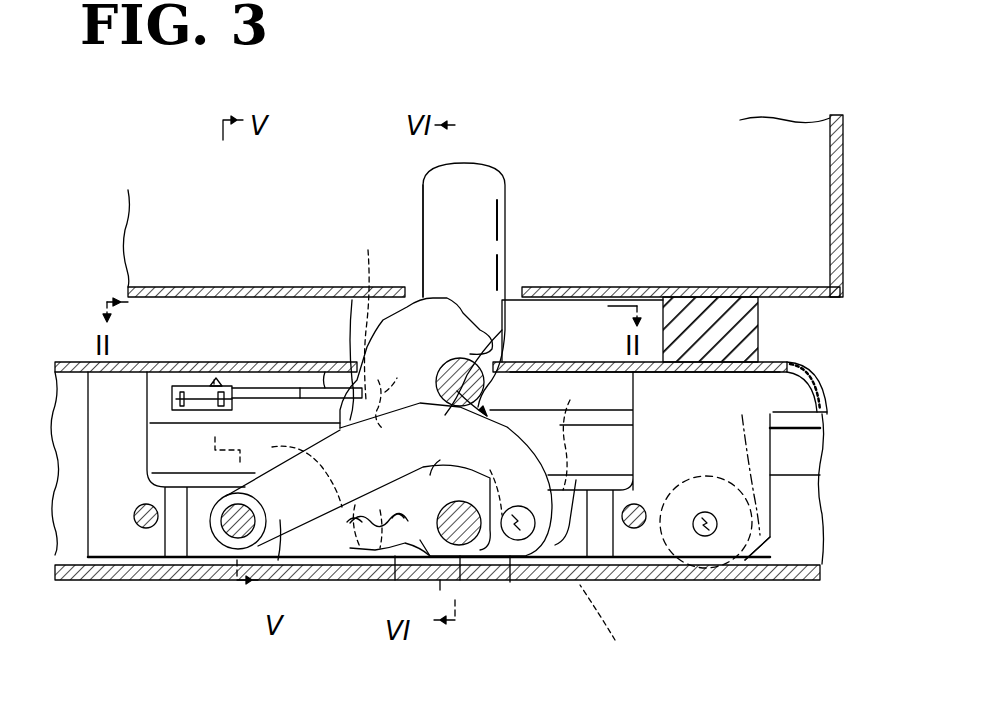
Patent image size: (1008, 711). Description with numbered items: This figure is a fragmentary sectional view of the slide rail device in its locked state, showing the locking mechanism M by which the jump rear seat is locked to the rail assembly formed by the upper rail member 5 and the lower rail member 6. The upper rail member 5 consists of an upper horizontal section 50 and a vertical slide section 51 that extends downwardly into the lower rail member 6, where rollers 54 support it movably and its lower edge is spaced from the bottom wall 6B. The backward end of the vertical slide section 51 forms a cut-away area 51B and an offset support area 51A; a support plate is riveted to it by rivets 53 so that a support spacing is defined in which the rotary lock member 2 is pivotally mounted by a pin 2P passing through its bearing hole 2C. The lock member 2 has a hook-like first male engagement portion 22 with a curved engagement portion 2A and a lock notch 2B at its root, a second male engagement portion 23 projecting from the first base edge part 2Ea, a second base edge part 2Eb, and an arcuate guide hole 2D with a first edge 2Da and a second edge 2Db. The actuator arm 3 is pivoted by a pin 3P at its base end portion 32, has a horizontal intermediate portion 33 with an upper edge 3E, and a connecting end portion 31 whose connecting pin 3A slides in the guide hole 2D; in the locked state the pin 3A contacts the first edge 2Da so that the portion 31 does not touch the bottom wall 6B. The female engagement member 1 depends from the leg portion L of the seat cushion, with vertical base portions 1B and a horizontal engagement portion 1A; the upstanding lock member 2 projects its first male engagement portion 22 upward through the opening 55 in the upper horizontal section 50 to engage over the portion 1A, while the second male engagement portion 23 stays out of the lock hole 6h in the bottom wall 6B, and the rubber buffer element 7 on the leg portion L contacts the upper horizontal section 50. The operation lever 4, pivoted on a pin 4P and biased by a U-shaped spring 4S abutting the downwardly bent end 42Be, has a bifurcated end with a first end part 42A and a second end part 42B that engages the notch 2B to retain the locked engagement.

The female engagement member 1 is at (423, 236).
The horizontal engagement portion 1A is at (504, 378).
The vertical base portions 1B is at (505, 233).
The rotary lock member 2 is at (370, 579).
The curved engagement portion 2A is at (463, 315).
The lock notch 2B is at (353, 304).
The bearing hole 2C is at (460, 584).
The arcuate guide hole 2D is at (588, 438).
The first edge of guide hole 2Da is at (491, 480).
The second edge of guide hole 2Db is at (625, 629).
The first base edge part 2Ea is at (370, 659).
The second base edge part 2Eb is at (510, 589).
The pin 2P is at (465, 549).
The actuator arm 3 is at (308, 534).
The connecting pin 3A is at (530, 579).
The upper edge of actuator arm intermediate portion 3E is at (492, 420).
The pin 3P is at (238, 525).
The operation lever 4 is at (270, 392).
The pin 4P is at (218, 382).
The U-shaped spring 4S is at (169, 392).
The upper rail member 5 is at (60, 366).
The lower rail member 6 is at (71, 586).
The bottom wall 6B is at (788, 586).
The lock hole 6h is at (443, 596).
The rubber buffer element 7 is at (743, 340).
The first male engagement portion 22 is at (502, 332).
The second male engagement portion 23 is at (370, 522).
The connecting end portion 31 is at (581, 495).
The base end portion 32 is at (280, 564).
The horizontal intermediate portion 33 is at (440, 466).
The first end part 42A is at (325, 392).
The second end part 42B is at (377, 309).
The downwardly bent end 42Be is at (421, 373).
The upper horizontal section 50 is at (788, 368).
The vertical slide section 51 is at (785, 460).
The offset support area 51A is at (600, 579).
The cut-away area 51B is at (668, 430).
The rivets 53 is at (140, 512).
The rollers 54 is at (713, 561).
The opening 55 is at (566, 374).
The locking mechanism M is at (657, 128).
The leg portion L is at (843, 191).